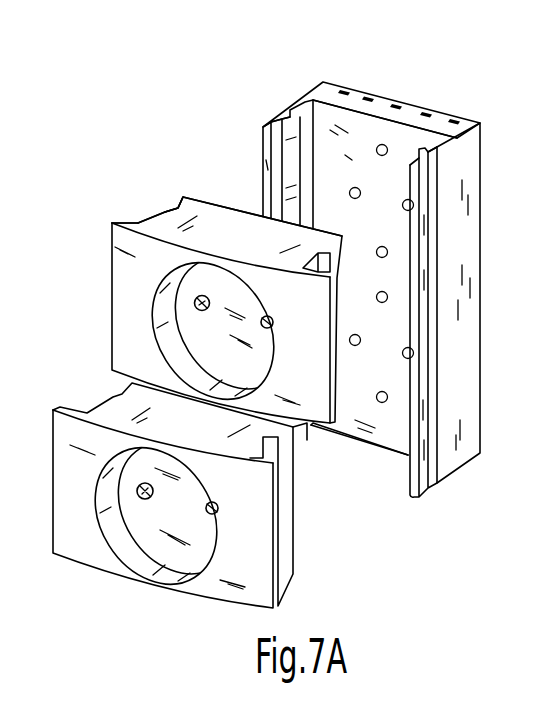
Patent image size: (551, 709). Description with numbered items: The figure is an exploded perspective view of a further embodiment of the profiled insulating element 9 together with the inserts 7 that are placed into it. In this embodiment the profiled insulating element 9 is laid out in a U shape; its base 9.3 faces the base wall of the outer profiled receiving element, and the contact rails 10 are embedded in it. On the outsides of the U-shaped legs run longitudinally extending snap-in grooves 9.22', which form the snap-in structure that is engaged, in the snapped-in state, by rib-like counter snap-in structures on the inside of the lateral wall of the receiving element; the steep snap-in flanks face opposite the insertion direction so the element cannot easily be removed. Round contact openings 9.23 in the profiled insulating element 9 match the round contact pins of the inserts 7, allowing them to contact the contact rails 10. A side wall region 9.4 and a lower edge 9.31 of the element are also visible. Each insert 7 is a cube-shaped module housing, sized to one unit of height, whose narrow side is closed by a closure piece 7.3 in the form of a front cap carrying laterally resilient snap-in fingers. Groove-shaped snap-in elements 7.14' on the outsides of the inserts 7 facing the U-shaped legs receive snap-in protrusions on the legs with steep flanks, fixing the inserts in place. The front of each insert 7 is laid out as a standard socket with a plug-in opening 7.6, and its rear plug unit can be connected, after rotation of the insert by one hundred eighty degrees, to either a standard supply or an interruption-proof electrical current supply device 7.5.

The insert 7 is at (107, 270).
The closure piece 7.3 is at (178, 202).
The interruption-proof electrical current supply device 7.5 is at (115, 223).
The socket outlet opening 7.6 is at (124, 298).
The groove-shaped snap-in element 7.14' is at (130, 178).
The profiled insulating element 9 is at (440, 118).
The base 9.3 is at (375, 95).
The right guide rail 9.4 is at (430, 155).
The snap-in groove 9.22' is at (250, 149).
The contact opening 9.23 is at (374, 404).
The bottom edge of housing front wall 9.31 is at (392, 457).
The contact rail 10 is at (447, 120).